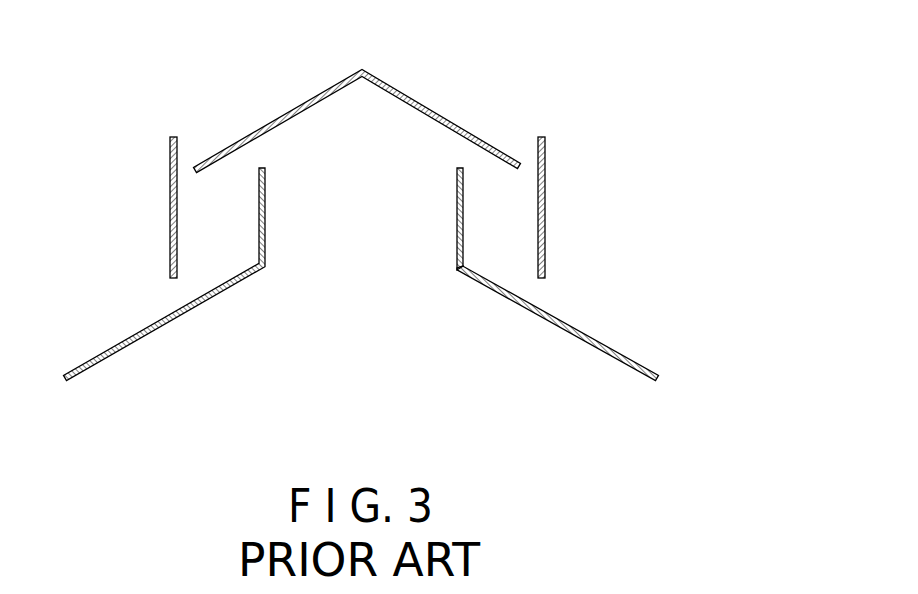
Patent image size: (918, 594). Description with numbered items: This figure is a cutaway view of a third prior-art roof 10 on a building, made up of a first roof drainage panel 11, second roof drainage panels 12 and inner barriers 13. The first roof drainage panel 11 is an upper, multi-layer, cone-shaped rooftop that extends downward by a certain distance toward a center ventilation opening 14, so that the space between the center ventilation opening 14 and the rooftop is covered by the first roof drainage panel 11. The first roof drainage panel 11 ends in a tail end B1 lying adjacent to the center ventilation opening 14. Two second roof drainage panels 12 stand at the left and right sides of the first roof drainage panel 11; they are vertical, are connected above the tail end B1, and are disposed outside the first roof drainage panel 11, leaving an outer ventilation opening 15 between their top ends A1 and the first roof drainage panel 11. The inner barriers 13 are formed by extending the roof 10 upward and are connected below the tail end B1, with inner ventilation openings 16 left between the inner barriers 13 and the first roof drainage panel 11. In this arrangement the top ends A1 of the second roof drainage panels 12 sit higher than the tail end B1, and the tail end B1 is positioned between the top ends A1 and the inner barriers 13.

The roof 10 is at (595, 351).
The first roof drainage panel 11 is at (430, 118).
The second roof drainage panels 12 is at (545, 247).
The inner barriers 13 is at (458, 210).
The center ventilation opening 14 is at (475, 213).
The outer ventilation opening 15 is at (527, 145).
The inner ventilation openings 16 is at (477, 162).
The top ends A1 is at (547, 148).
The tail end B1 is at (513, 168).